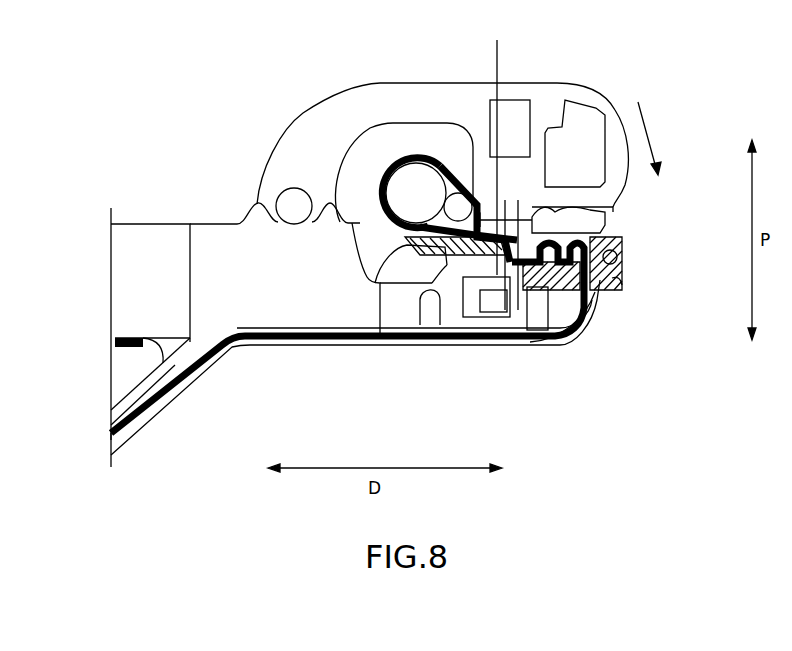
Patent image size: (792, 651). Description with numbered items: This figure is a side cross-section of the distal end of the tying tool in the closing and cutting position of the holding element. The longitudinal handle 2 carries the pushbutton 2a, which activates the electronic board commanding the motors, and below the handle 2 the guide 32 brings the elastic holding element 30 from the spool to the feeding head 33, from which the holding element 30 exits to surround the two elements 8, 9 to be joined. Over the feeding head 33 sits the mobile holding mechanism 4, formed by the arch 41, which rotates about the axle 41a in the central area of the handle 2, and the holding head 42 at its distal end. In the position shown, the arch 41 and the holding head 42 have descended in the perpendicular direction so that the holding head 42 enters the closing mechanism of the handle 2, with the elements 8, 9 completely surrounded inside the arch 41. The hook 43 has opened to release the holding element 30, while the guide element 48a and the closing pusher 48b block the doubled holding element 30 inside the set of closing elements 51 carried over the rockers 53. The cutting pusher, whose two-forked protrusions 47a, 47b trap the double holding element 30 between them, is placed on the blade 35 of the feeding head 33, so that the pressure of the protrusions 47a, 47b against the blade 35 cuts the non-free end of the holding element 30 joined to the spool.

The handle 2 is at (142, 247).
The pushbutton 2a is at (120, 346).
The holding mechanism 4 is at (436, 62).
The element to be joined 8 is at (408, 198).
The element to be joined 9 is at (458, 207).
The holding element 30 is at (273, 338).
The guide 32 is at (182, 393).
The feeding head 33 is at (623, 277).
The blade 35 is at (575, 327).
The arch 41 is at (410, 102).
The axle 41a is at (293, 203).
The holding head 42 is at (572, 121).
The hook 43 is at (607, 224).
The protrusion of the cutting pusher 47a is at (566, 330).
The protrusion of the cutting pusher 47b is at (592, 303).
The guide element 48a is at (518, 330).
The closing pusher 48b is at (463, 350).
The closing element 51 is at (497, 60).
The rocker 53 is at (418, 300).